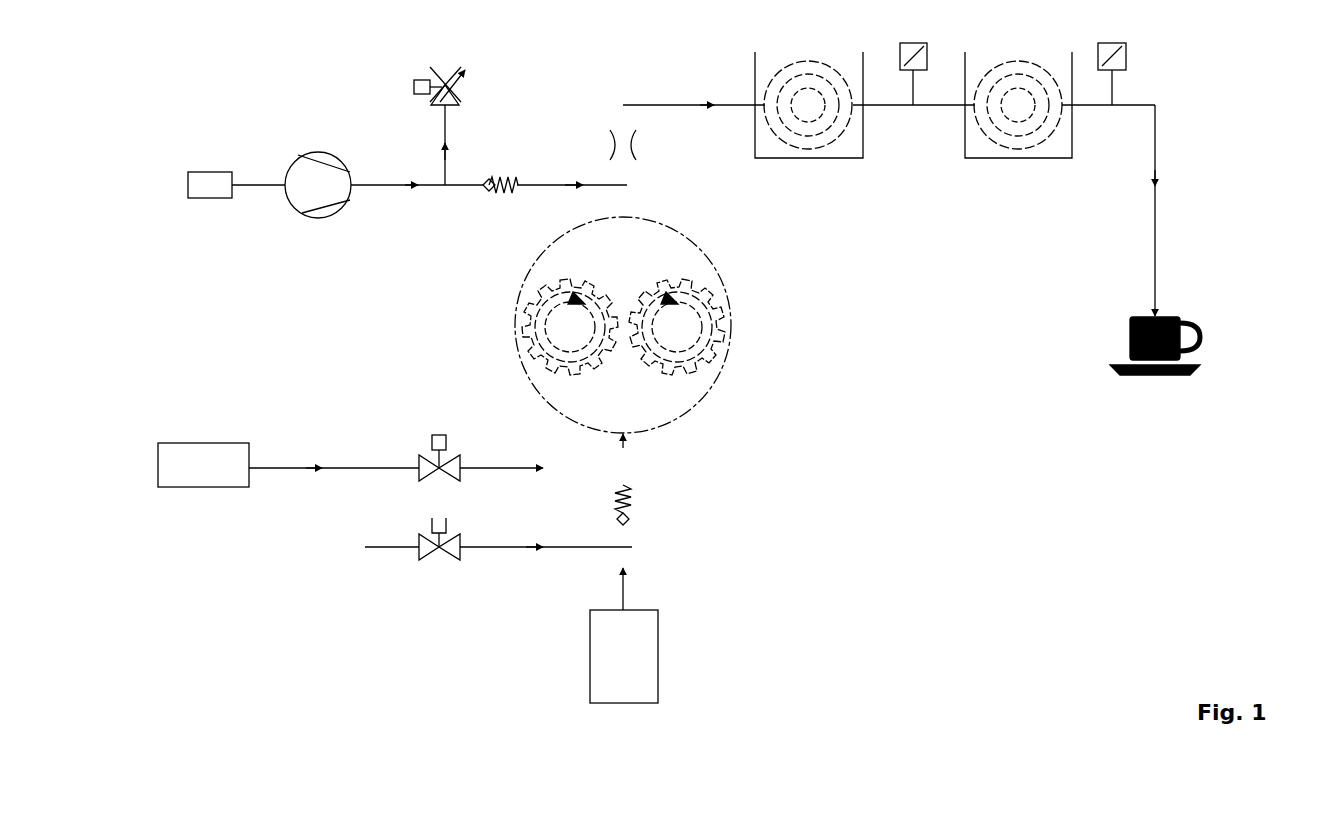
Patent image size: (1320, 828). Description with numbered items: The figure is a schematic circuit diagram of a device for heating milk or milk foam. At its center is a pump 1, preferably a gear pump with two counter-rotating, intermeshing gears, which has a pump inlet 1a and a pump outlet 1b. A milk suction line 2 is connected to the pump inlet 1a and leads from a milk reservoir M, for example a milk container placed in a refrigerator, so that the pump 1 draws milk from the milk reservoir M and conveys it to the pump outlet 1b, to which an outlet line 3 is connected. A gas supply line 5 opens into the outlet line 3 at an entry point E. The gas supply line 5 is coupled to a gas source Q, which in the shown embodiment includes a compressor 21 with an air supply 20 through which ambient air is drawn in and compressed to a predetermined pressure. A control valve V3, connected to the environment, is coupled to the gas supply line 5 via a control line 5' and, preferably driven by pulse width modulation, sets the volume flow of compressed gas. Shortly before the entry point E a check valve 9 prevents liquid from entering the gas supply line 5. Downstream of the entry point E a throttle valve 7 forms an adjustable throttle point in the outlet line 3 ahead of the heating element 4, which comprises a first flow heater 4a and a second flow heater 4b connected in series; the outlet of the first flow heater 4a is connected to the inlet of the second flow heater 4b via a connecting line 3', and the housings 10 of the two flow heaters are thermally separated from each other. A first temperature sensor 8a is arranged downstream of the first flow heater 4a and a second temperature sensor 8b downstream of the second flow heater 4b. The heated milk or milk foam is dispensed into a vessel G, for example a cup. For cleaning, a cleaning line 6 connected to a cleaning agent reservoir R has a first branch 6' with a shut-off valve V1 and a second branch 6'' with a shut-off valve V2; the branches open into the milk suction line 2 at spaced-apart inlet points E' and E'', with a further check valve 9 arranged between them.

The gas source Q is at (222, 145).
The air supply 20 is at (210, 198).
The compressor 21 is at (298, 188).
The gas supply line 5 is at (417, 237).
The control line 5' is at (402, 145).
The control valve V3 is at (455, 87).
The check valve 9 is at (557, 351).
The throttle valve 7 is at (600, 145).
The entry point E is at (598, 204).
The outlet line 3 is at (935, 210).
The heating element 4 is at (734, 63).
The first flow heater 4a is at (803, 162).
The second flow heater 4b is at (1010, 162).
The housings 10 is at (835, 160).
The first temperature sensor 8a is at (912, 59).
The second temperature sensor 8b is at (1111, 59).
The connecting line 3' is at (908, 147).
The vessel G is at (1183, 353).
The pump 1 is at (712, 389).
The pump inlet 1a is at (617, 406).
The pump outlet 1b is at (623, 307).
The milk suction line 2 is at (630, 450).
The first inlet point E' is at (677, 488).
The second inlet point E'' is at (685, 569).
The cleaning agent reservoir R is at (203, 465).
The cleaning line 6 is at (334, 415).
The first branch 6' is at (501, 436).
The second branch 6'' is at (498, 587).
The shut-off valve V1 is at (439, 439).
The shut-off valve V2 is at (439, 554).
The milk reservoir M is at (624, 635).